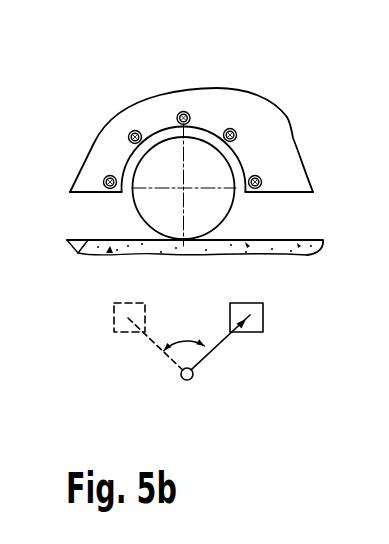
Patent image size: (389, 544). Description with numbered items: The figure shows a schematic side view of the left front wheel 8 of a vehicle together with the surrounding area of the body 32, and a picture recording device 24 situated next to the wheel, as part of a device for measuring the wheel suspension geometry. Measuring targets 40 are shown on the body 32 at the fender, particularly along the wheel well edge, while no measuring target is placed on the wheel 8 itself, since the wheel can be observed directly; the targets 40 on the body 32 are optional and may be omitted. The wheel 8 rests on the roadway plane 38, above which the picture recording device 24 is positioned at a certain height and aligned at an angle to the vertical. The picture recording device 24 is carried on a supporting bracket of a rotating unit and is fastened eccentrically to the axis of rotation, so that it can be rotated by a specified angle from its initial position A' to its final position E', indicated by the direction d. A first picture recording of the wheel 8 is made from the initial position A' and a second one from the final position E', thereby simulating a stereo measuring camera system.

The left front wheel 8 is at (220, 206).
The picture recording device 24 is at (263, 316).
The body 32 is at (293, 170).
The roadway plane 38 is at (77, 252).
The measuring targets 40 is at (225, 130).
The initial position A' is at (148, 336).
The final position E' is at (248, 353).
The pivot direction d is at (209, 355).